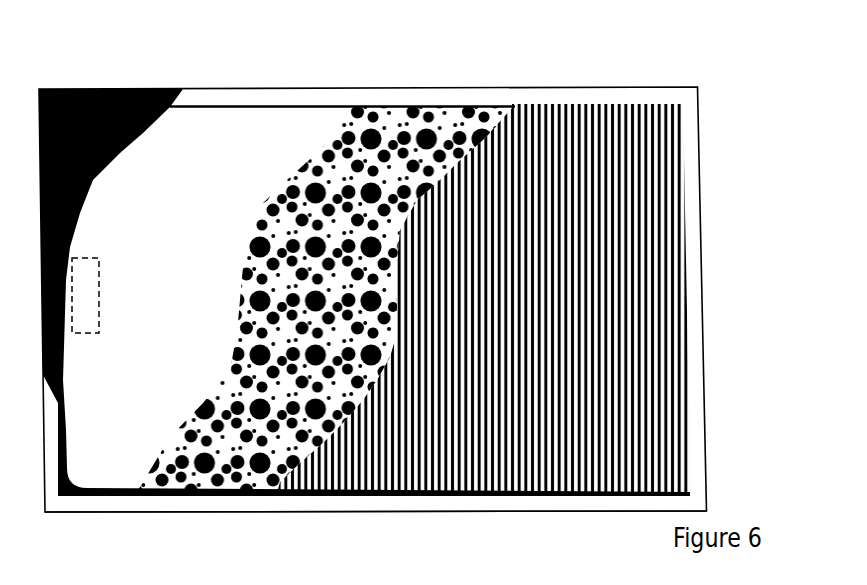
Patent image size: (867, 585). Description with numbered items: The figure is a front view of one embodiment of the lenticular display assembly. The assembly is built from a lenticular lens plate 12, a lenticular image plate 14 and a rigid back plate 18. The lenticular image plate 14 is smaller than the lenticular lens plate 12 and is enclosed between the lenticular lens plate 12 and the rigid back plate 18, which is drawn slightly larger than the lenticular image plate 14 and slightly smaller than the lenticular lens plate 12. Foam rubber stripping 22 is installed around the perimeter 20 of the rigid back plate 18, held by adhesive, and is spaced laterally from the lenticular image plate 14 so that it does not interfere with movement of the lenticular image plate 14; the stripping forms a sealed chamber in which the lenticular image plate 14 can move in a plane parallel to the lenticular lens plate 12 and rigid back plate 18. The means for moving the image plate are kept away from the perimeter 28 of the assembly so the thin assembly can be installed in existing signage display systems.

The lenticular lens plate 12 is at (355, 493).
The lenticular image plate 14 is at (217, 480).
The rigid back plate 18 is at (80, 88).
The perimeter of the rigid back plate 20 is at (113, 503).
The foam rubber stripping 22 is at (235, 102).
The perimeter of the lenticular display assembly 28 is at (372, 512).